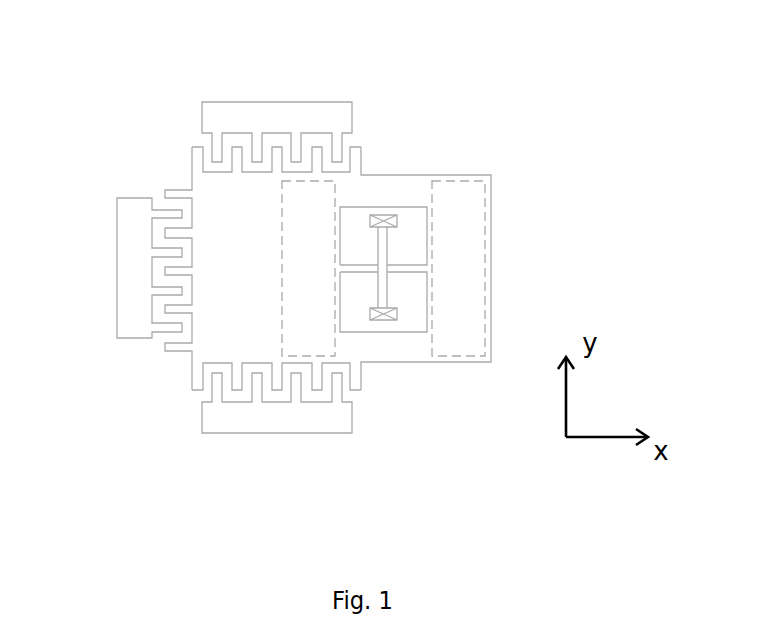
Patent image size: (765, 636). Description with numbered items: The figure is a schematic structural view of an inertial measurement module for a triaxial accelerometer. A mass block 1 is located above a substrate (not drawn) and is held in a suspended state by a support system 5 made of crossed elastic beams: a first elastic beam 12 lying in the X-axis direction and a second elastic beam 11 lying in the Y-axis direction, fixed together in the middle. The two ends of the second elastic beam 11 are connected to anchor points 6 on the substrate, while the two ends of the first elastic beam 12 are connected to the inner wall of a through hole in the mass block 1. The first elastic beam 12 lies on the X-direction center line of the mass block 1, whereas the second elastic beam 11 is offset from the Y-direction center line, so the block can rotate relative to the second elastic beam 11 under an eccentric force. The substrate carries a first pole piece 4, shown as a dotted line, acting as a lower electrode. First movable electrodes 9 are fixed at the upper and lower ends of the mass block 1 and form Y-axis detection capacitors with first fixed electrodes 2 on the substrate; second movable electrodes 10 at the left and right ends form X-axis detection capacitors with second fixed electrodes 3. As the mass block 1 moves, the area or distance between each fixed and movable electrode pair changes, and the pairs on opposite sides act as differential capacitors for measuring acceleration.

The mass block 1 is at (265, 283).
The first fixed electrodes 2 is at (218, 116).
The second fixed electrodes 3 is at (139, 292).
The first pole piece 4 is at (317, 233).
The support system 5 is at (424, 305).
The anchor points 6 is at (370, 217).
The first movable electrodes 9 is at (242, 148).
The second movable electrodes 10 is at (167, 265).
The second elastic beam 11 is at (385, 250).
The first elastic beam 12 is at (396, 289).